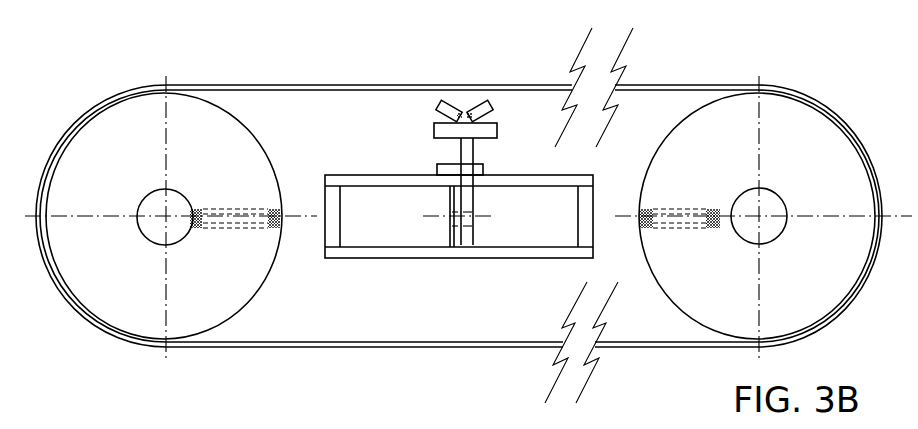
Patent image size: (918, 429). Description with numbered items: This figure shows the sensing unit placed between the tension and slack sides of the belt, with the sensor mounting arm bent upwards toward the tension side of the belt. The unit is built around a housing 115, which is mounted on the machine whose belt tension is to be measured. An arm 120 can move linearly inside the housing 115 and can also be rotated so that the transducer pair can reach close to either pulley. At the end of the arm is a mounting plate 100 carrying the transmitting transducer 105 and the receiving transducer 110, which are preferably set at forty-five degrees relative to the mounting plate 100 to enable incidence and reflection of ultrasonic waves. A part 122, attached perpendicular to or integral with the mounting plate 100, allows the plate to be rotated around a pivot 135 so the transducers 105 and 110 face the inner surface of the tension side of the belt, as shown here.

The mounting plate 100 is at (497, 133).
The transmitting transducer 105 is at (483, 107).
The receiving transducer 110 is at (449, 108).
The housing 115 is at (343, 172).
The arm 120 is at (445, 232).
The part 122 is at (458, 150).
The pivot 135 is at (468, 223).